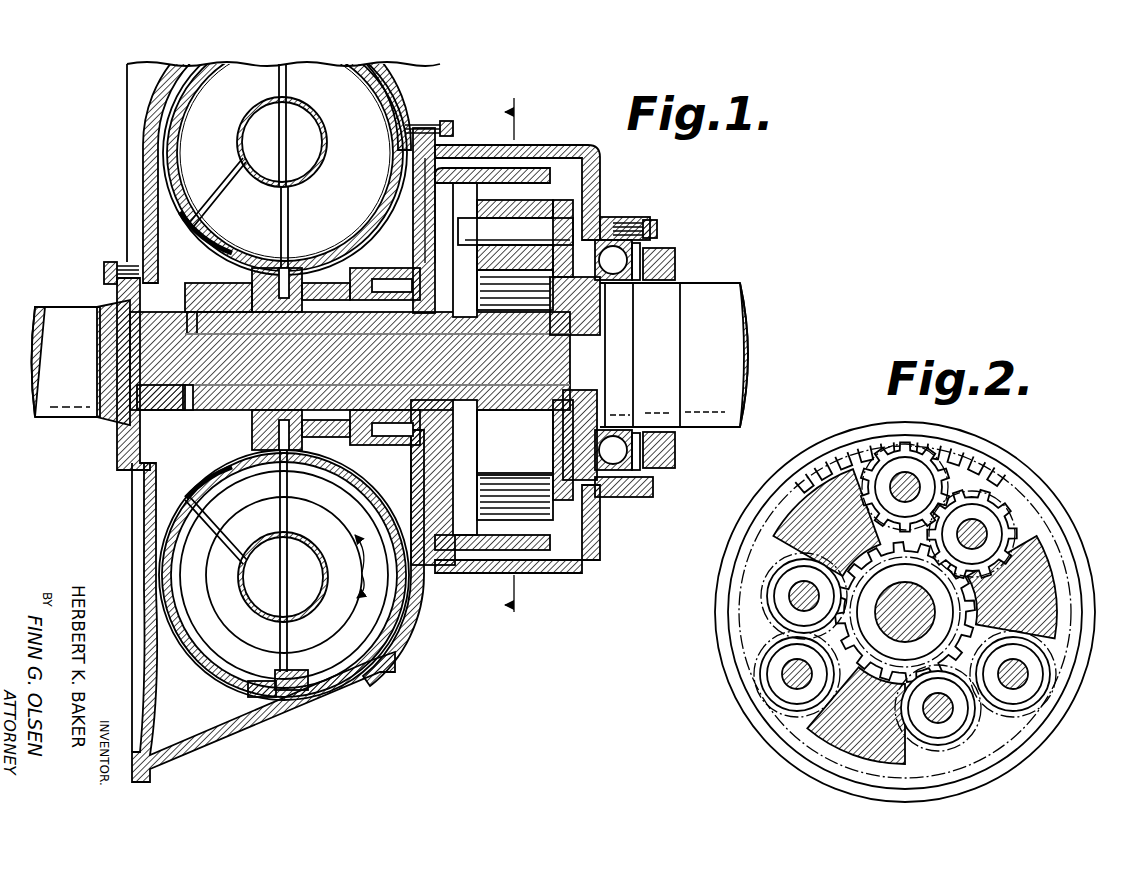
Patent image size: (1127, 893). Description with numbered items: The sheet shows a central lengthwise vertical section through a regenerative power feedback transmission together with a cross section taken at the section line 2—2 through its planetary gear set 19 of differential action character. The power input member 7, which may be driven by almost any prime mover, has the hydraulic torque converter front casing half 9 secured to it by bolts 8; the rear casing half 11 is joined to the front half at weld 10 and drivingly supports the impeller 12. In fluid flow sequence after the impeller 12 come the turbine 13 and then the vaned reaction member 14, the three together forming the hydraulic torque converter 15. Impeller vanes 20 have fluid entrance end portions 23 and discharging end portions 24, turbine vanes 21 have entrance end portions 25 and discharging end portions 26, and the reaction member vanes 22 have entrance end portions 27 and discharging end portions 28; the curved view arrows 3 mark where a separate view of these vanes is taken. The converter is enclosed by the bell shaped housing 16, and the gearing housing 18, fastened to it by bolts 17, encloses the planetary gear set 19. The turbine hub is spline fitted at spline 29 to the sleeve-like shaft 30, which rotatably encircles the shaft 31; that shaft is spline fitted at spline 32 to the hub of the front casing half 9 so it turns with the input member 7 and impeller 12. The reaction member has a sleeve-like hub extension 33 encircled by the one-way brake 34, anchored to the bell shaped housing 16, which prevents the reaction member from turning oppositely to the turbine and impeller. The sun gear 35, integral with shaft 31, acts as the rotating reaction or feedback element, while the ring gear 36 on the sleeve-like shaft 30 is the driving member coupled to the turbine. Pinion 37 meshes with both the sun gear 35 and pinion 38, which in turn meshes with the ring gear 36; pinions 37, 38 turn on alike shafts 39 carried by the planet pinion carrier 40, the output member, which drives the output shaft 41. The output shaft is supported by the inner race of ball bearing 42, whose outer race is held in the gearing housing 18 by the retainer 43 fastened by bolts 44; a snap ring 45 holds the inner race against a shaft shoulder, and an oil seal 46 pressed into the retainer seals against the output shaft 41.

In FIG. 1, the section line 2— 2 is at (499, 356).
In FIG. 1, the direction of rotation arrows 3 is at (352, 565).
In FIG. 1, the power input member 7 is at (70, 350).
In FIG. 1, the bolts 8 is at (104, 269).
In FIG. 1, the hydraulic torque converter front casing half 9 is at (144, 231).
In FIG. 1, the weld 10 is at (268, 717).
In FIG. 1, the hydraulic torque converter rear casing half 11 is at (330, 673).
In FIG. 1, the impeller 12 is at (362, 672).
In FIG. 1, the turbine 13 is at (231, 648).
In FIG. 1, the vaned reaction member 14 is at (220, 450).
In FIG. 1, the hydraulic torque converter 15 is at (245, 703).
In FIG. 1, the bell shaped housing 16 is at (384, 669).
In FIG. 1, the bolts 17 is at (450, 121).
In FIG. 1, the gearing housing 18 is at (594, 162).
In FIG. 1, the planetary gear set 19 is at (562, 195).
In FIG. 1, the impeller vanes 20 is at (343, 170).
In FIG. 1, the turbine vanes 21 is at (195, 137).
In FIG. 1, the vaned reaction member vanes 22 is at (243, 206).
In FIG. 1, the fluid entrance end portions 23 is at (290, 229).
In FIG. 1, the discharging end portions 24 is at (290, 96).
In FIG. 1, the fluid entrance end portions 25 is at (276, 98).
In FIG. 1, the discharging end portions 26 is at (220, 196).
In FIG. 1, the fluid entrance end portions 27 is at (230, 245).
In FIG. 1, the discharging end portions 28 is at (290, 262).
In FIG. 1, the spline fitting 29 is at (223, 448).
In FIG. 1, the sleeve-like shaft 30 is at (308, 450).
In FIG. 1, the shaft 31 is at (208, 310).
In FIG. 2, the shaft 31 is at (925, 615).
In FIG. 1, the spline fitting 32 is at (140, 297).
In FIG. 1, the sleeve-like hub extension 33 is at (320, 282).
In FIG. 1, the one-way brake 34 is at (372, 278).
In FIG. 1, the sun gear 35 is at (518, 416).
In FIG. 2, the sun gear 35 is at (967, 587).
In FIG. 1, the ring gear 36 is at (520, 522).
In FIG. 2, the ring gear 36 is at (834, 451).
In FIG. 2, the pinion 37 is at (980, 495).
In FIG. 1, the pinion 38 is at (540, 212).
In FIG. 2, the pinion 38 is at (880, 472).
In FIG. 1, the shafts 39 is at (498, 240).
In FIG. 2, the shafts 39 is at (790, 675).
In FIG. 1, the planet pinion carrier 40 is at (577, 487).
In FIG. 2, the planet pinion carrier 40 is at (855, 715).
In FIG. 1, the output shaft 41 is at (698, 350).
In FIG. 1, the ball bearing 42 is at (653, 485).
In FIG. 1, the retainer 43 is at (675, 251).
In FIG. 1, the bolts 44 is at (658, 223).
In FIG. 1, the snap ring 45 is at (645, 280).
In FIG. 1, the oil seal 46 is at (676, 457).